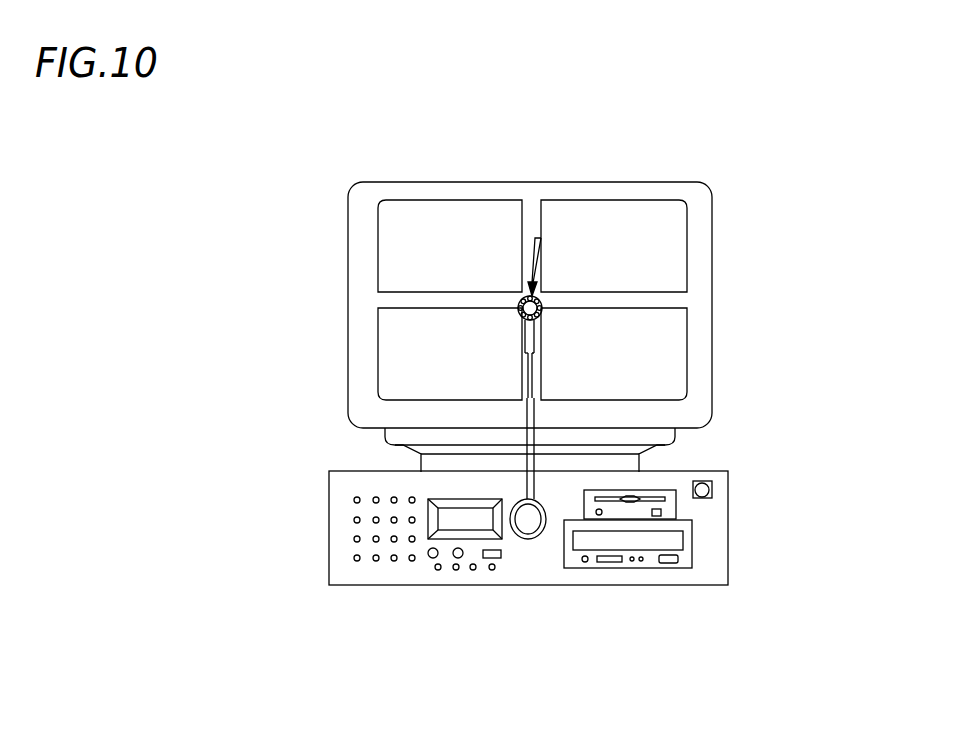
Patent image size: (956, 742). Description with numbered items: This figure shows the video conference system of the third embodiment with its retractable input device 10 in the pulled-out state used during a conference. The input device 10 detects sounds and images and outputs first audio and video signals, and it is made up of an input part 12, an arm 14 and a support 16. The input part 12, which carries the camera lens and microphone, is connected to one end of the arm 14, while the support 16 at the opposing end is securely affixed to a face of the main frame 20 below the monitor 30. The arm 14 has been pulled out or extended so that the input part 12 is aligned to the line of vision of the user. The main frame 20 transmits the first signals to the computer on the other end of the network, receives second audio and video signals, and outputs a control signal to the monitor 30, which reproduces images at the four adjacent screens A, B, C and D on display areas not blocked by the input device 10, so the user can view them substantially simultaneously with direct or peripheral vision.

The input device 10 is at (541, 238).
The input part 12 is at (542, 308).
The arm 14 is at (532, 428).
The support 16 is at (528, 523).
The main frame 20 is at (717, 543).
The monitor 30 is at (697, 363).